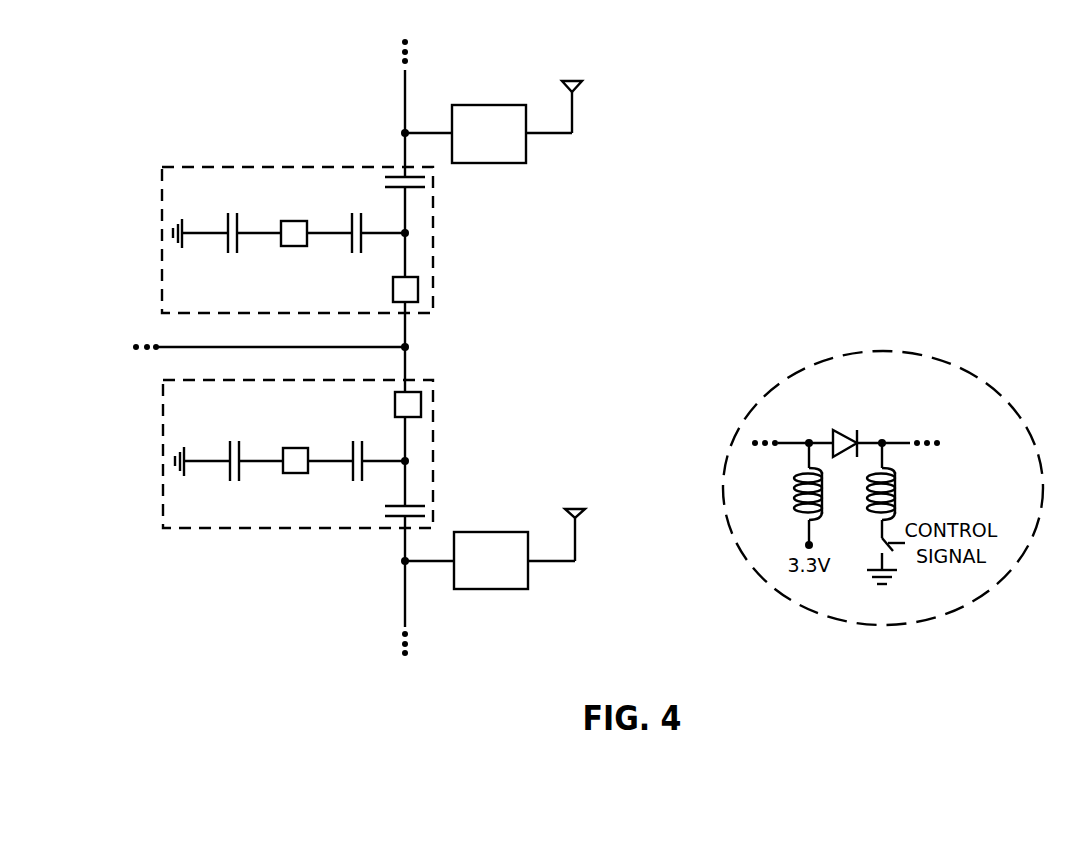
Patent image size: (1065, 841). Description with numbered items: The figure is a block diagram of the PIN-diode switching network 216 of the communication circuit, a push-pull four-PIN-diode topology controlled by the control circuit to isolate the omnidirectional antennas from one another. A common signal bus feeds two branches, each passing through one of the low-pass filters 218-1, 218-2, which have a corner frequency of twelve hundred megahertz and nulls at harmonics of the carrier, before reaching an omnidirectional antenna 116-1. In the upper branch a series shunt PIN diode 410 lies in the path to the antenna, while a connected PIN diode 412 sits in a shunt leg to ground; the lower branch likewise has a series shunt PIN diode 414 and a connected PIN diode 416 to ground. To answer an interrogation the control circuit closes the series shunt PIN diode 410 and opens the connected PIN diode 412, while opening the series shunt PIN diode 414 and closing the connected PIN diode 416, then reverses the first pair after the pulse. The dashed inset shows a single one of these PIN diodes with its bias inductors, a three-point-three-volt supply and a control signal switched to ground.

The PIN-diode switching network 216 is at (162, 257).
The connected PIN diode 412 is at (293, 221).
The series shunt PIN diode 410 is at (418, 292).
The series shunt PIN diode 414 is at (421, 405).
The connected PIN diode 416 is at (293, 473).
The low-pass filter 218-1 is at (465, 134).
The low-pass filter 218-2 is at (466, 560).
The omnidirectional antenna 116-1 is at (577, 85).